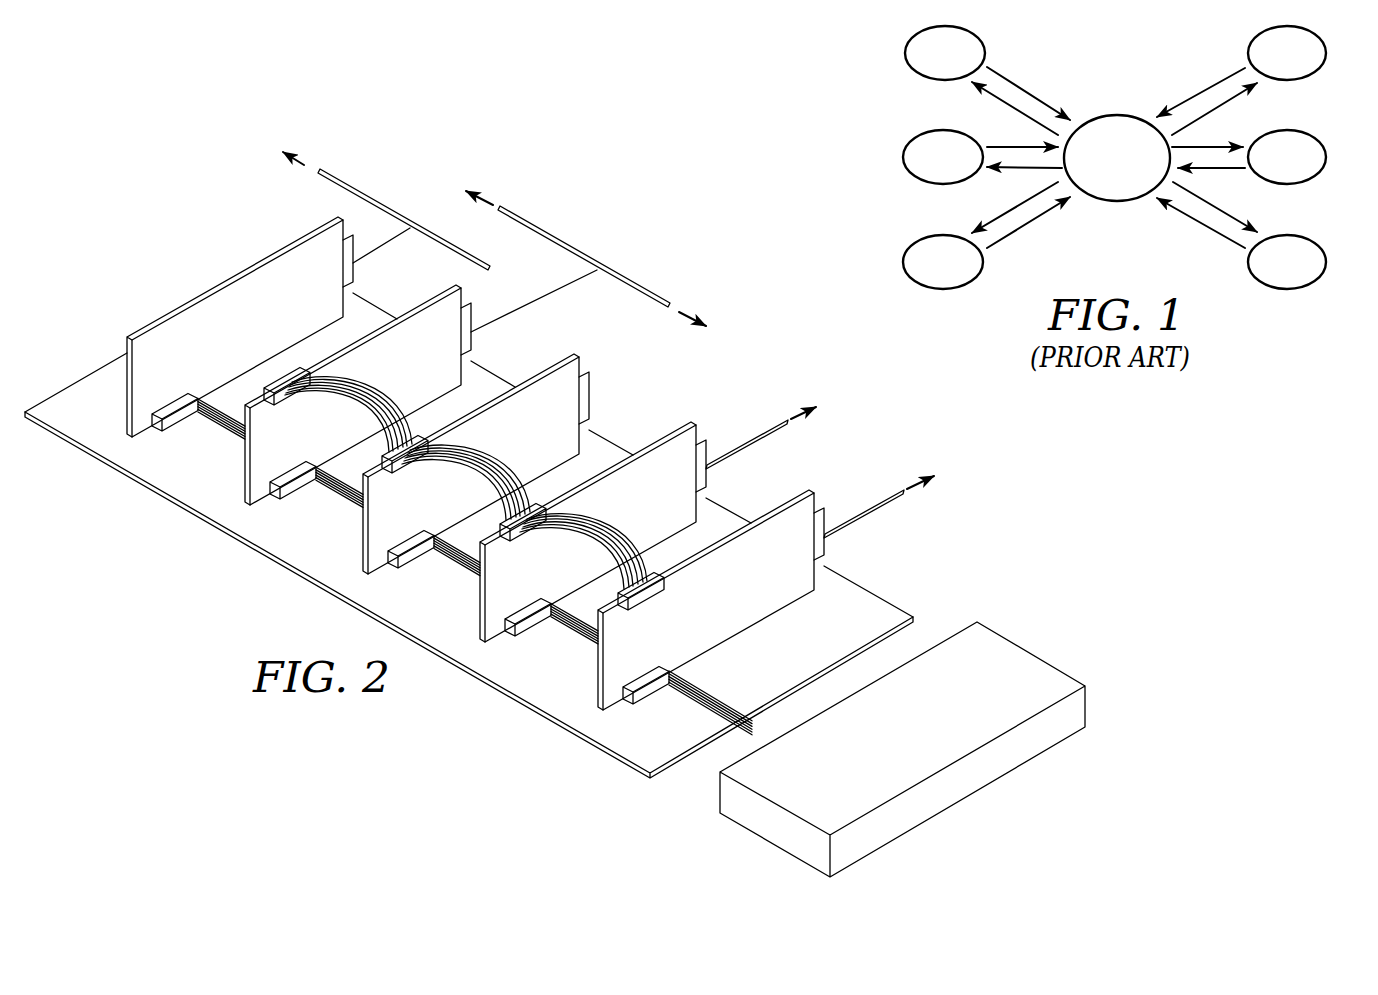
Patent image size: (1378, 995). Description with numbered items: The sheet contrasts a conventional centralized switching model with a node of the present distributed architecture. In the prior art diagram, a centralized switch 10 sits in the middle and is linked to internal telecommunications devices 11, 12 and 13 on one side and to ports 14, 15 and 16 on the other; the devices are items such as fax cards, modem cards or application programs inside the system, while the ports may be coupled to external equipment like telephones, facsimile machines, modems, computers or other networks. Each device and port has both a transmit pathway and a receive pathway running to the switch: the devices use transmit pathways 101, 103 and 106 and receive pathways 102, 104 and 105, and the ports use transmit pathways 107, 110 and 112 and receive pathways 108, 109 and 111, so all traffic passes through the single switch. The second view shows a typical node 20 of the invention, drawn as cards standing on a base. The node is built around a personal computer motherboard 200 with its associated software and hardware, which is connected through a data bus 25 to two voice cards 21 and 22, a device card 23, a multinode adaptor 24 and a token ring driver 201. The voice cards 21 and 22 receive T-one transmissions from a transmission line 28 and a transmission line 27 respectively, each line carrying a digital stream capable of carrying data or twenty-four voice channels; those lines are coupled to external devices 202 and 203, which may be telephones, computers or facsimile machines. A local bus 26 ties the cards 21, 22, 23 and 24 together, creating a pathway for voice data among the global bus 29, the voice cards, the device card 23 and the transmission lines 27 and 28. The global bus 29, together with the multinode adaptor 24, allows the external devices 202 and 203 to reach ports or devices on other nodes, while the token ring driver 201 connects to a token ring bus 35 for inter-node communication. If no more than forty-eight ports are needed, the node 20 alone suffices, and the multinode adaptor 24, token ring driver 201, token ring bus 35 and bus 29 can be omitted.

In FIG. 1, the centralized switch 10 is at (1108, 113).
In FIG. 1, the telecommunications device 11 is at (905, 50).
In FIG. 1, the telecommunications device 12 is at (903, 157).
In FIG. 1, the telecommunications device 13 is at (903, 263).
In FIG. 1, the port 14 is at (1328, 52).
In FIG. 1, the port 15 is at (1328, 156).
In FIG. 1, the port 16 is at (1328, 268).
In FIG. 1, the transmit pathway 101 is at (1012, 80).
In FIG. 1, the receive pathway 102 is at (990, 93).
In FIG. 1, the transmit pathway 103 is at (1022, 145).
In FIG. 1, the receive pathway 104 is at (1022, 169).
In FIG. 1, the receive pathway 105 is at (988, 222).
In FIG. 1, the transmit pathway 106 is at (1012, 233).
In FIG. 1, the transmit pathway 107 is at (1215, 80).
In FIG. 1, the receive pathway 108 is at (1240, 92).
In FIG. 1, the receive pathway 109 is at (1205, 145).
In FIG. 1, the transmit pathway 110 is at (1205, 169).
In FIG. 1, the receive pathway 111 is at (1240, 222).
In FIG. 1, the transmit pathway 112 is at (1218, 235).
In FIG. 2, the node 20 is at (535, 757).
In FIG. 2, the voice card 21 is at (683, 649).
In FIG. 2, the voice card 22 is at (551, 573).
In FIG. 2, the device card 23 is at (431, 505).
In FIG. 2, the multinode adaptor 24 is at (288, 438).
In FIG. 2, the data bus 25 is at (704, 707).
In FIG. 2, the local bus 26 is at (362, 410).
In FIG. 2, the T1 transmission line 27 is at (773, 430).
In FIG. 2, the T1 transmission line 28 is at (891, 496).
In FIG. 2, the global bus 29 is at (640, 288).
In FIG. 2, the token ring bus 35 is at (326, 171).
In FIG. 2, the PS/2 computer motherboard 200 is at (1033, 666).
In FIG. 2, the token ring driver 201 is at (208, 372).
In FIG. 2, the external device 202 is at (855, 405).
In FIG. 2, the external device 203 is at (973, 472).